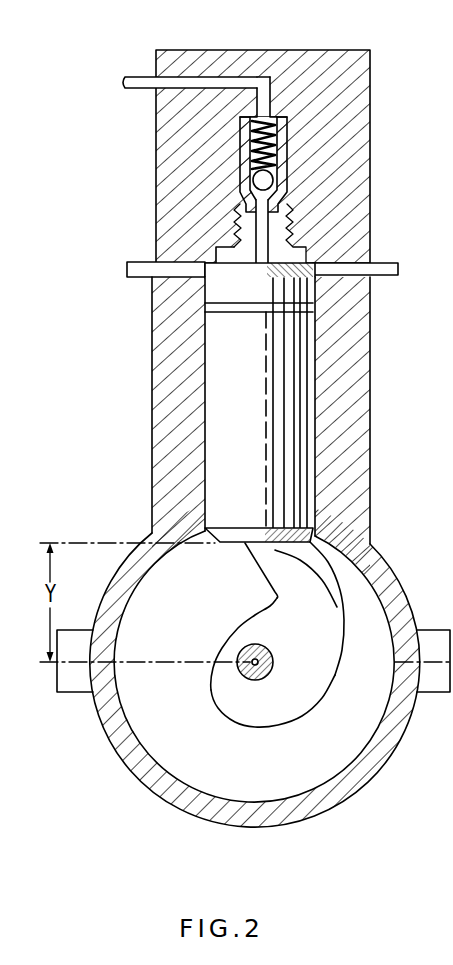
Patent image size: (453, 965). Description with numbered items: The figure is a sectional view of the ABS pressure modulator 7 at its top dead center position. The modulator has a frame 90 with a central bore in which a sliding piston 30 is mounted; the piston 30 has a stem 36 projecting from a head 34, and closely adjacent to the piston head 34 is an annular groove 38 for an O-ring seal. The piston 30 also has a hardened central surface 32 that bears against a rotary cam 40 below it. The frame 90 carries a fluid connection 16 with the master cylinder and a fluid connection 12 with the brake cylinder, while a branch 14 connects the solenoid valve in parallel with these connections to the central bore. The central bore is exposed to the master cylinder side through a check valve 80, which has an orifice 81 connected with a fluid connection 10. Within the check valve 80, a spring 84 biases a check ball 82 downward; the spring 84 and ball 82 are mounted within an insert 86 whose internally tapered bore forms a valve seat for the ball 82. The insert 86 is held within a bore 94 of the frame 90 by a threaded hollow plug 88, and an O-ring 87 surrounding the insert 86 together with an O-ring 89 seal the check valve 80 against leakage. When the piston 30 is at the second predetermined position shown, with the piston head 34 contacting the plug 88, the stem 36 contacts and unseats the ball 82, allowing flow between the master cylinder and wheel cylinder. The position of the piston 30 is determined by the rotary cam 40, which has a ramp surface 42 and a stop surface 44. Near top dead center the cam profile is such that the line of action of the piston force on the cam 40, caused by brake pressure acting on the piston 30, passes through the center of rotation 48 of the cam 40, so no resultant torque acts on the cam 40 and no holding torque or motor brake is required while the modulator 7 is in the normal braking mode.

The ABS pressure modulator 7 is at (343, 51).
The fluid connection 10 is at (252, 88).
The fluid connection with master cylinder 16 is at (140, 77).
The orifice 81 is at (277, 95).
The check valve 80 is at (250, 179).
The spring 84 is at (287, 122).
The bore 94 is at (243, 125).
The insert 86 is at (287, 150).
The check ball 82 is at (276, 182).
The O-ring 87 is at (285, 212).
The stem 36 is at (236, 212).
The threaded hollow plug 88 is at (236, 240).
The O-ring 89 is at (296, 250).
The branch 14 is at (138, 276).
The fluid connection with brake cylinder 12 is at (385, 276).
The piston head 34 is at (210, 278).
The annular groove 38 is at (248, 312).
The frame 90 is at (160, 400).
The sliding piston 30 is at (322, 410).
The rotary cam 40 is at (254, 552).
The hardened central surface 32 is at (269, 655).
The stop surface 44 is at (262, 583).
The ramp surface 42 is at (268, 727).
The center of rotation 48 is at (267, 677).